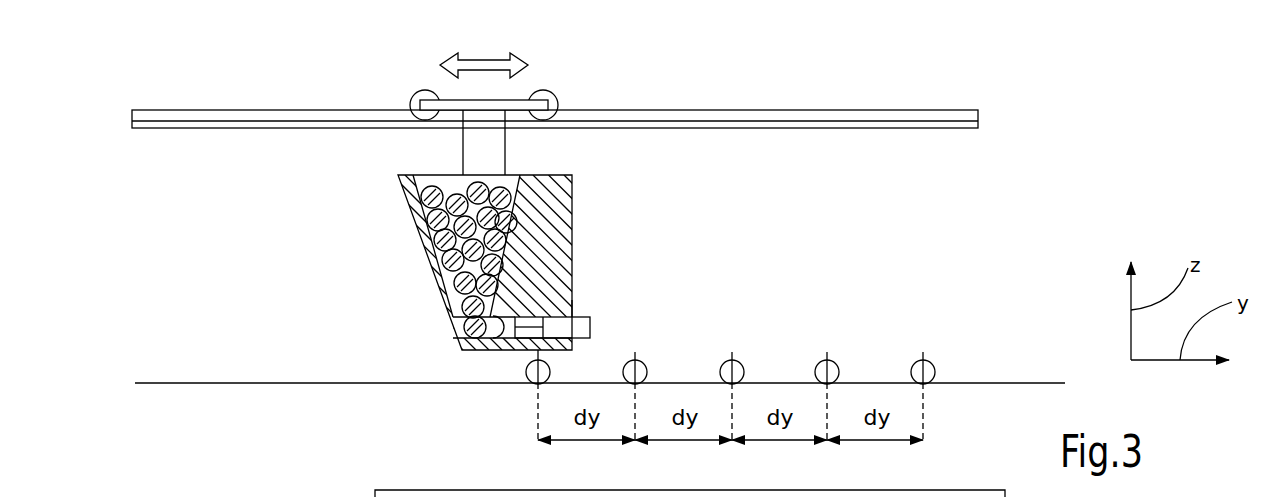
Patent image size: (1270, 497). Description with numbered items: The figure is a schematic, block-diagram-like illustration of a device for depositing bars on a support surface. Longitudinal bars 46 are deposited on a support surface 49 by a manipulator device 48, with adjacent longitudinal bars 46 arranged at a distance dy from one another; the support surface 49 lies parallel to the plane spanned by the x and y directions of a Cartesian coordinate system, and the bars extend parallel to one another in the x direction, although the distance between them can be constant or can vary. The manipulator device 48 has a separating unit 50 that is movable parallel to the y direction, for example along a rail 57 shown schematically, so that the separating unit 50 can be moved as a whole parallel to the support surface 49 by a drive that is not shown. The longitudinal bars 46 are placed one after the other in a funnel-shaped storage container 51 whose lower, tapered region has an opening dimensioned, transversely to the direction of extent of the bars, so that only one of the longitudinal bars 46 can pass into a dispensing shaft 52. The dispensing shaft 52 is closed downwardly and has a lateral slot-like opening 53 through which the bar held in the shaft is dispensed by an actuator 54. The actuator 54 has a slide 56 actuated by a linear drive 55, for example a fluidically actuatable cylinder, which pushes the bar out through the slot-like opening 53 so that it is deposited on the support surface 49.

The longitudinal bars 46 is at (422, 176).
The manipulator device 48 is at (1052, 92).
The support surface 49 is at (242, 380).
The separating unit 50 is at (605, 232).
The funnel-shaped storage container 51 is at (523, 175).
The dispensing shaft 52 is at (493, 333).
The slot-like opening 53 is at (452, 327).
The actuator 54 is at (582, 307).
The linear drive 55 is at (590, 330).
The slide 56 is at (508, 332).
The rail 57 is at (850, 113).